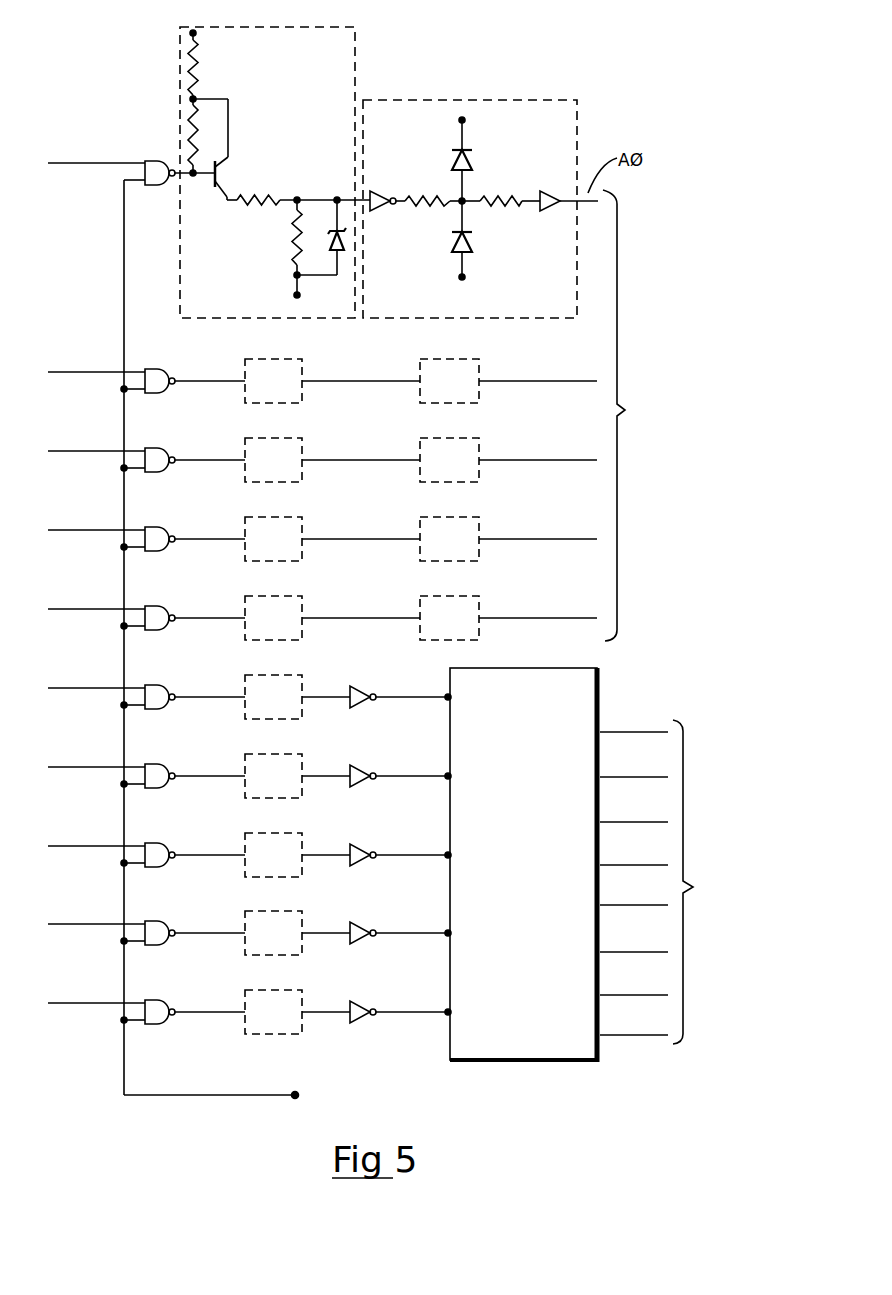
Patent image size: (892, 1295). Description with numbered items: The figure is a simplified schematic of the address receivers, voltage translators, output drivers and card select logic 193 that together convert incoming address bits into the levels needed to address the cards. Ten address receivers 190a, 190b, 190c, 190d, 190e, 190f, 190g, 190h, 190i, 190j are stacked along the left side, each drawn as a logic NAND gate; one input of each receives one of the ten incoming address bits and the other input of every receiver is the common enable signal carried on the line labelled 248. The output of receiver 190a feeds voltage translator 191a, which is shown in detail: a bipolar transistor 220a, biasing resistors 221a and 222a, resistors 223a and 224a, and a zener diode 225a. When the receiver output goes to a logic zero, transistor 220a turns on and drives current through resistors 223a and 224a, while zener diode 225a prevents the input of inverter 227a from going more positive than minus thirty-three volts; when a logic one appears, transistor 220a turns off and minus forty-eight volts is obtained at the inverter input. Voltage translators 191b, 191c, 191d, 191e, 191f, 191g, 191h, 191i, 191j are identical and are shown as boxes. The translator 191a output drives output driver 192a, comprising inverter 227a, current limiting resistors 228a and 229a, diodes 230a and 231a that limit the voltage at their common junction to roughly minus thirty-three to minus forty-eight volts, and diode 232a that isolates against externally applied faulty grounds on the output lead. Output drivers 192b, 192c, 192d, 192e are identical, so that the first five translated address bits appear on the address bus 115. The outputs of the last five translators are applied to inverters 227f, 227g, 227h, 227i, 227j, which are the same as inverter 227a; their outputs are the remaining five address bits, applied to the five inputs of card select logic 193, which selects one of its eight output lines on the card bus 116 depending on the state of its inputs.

The address receiver 190a is at (153, 160).
The address receiver 190b is at (157, 368).
The address receiver 190c is at (157, 447).
The address receiver 190d is at (157, 526).
The address receiver 190e is at (157, 605).
The address receiver 190f is at (157, 684).
The address receiver 190g is at (157, 763).
The address receiver 190h is at (157, 842).
The address receiver 190i is at (157, 920).
The address receiver 190j is at (157, 999).
The voltage translator 191a is at (275, 24).
The voltage translator 191b is at (270, 359).
The voltage translator 191c is at (270, 438).
The voltage translator 191d is at (270, 517).
The voltage translator 191e is at (270, 596).
The voltage translator 191f is at (270, 675).
The voltage translator 191g is at (270, 754).
The voltage translator 191h is at (270, 833).
The voltage translator 191i is at (270, 911).
The voltage translator 191j is at (270, 990).
The output driver 192a is at (548, 98).
The output driver 192b is at (445, 359).
The output driver 192c is at (445, 438).
The output driver 192d is at (445, 517).
The output driver 192e is at (445, 596).
The card select logic 193 is at (588, 1062).
The bipolar transistor 220a is at (211, 186).
The biasing resistor 221a is at (201, 59).
The biasing resistor 222a is at (214, 128).
The resistor 223a is at (281, 196).
The resistor 224a is at (293, 258).
The zener diode 225a is at (342, 254).
The inverter 227a is at (412, 222).
The inverter 227f is at (358, 686).
The inverter 227g is at (358, 765).
The inverter 227h is at (358, 844).
The inverter 227i is at (358, 922).
The inverter 227j is at (358, 1001).
The resistor 228a is at (418, 156).
The resistor 229a is at (500, 207).
The diode 230a is at (470, 159).
The diode 231a is at (452, 242).
The diode 232a is at (545, 212).
The enable line 248 is at (240, 1095).
The address bus 115 is at (661, 415).
The card bus 116 is at (674, 879).